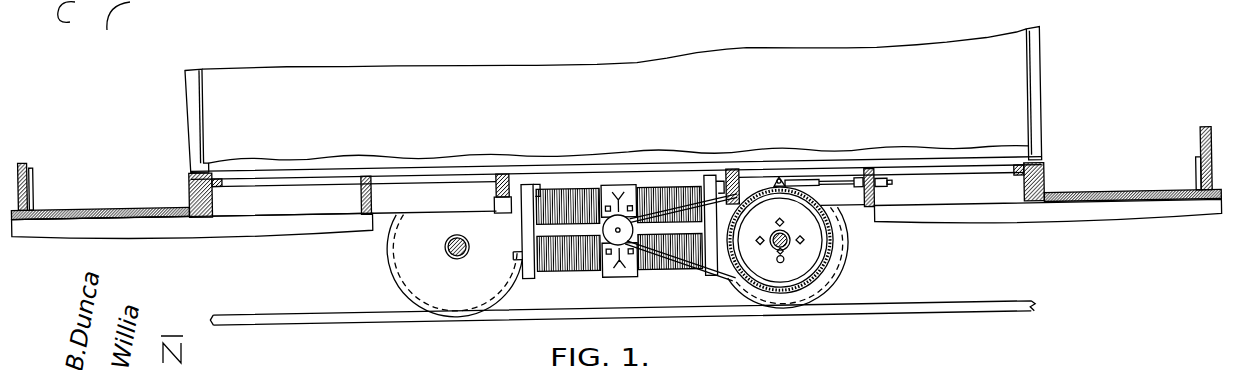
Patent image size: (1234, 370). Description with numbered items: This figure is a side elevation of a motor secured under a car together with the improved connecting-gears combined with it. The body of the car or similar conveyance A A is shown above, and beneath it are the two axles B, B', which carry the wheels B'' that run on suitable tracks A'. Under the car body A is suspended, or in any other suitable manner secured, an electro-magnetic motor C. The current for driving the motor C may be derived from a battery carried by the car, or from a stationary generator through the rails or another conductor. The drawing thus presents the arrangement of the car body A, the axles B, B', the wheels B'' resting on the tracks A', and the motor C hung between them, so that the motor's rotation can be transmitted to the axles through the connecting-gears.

The car body A is at (612, 103).
The tracks A' is at (622, 302).
The axle B is at (810, 234).
The axle B' is at (472, 246).
The wheels B'' is at (628, 262).
The electro-magnetic motor C is at (601, 271).